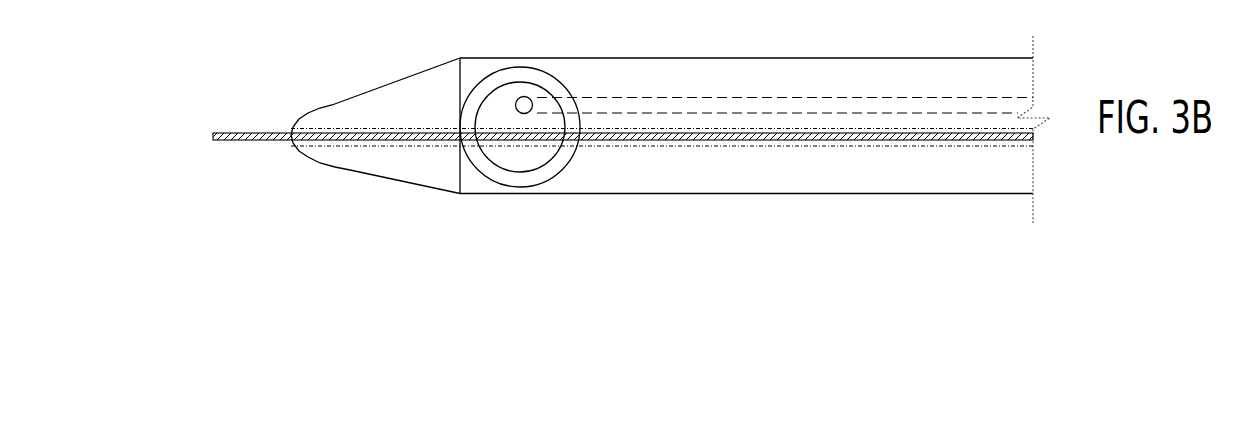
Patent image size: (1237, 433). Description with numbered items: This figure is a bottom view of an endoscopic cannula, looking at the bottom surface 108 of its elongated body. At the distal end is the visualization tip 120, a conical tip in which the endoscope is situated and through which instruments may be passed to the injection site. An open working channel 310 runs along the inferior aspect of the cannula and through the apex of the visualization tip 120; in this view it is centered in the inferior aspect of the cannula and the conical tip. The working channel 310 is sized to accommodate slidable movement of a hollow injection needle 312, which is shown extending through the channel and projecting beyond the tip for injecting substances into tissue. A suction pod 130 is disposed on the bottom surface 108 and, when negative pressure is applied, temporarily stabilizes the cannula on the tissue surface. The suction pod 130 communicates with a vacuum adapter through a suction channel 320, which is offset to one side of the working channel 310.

The bottom surface 108 is at (686, 177).
The visualization tip 120 is at (363, 172).
The suction pod 130 is at (493, 182).
The working channel 310 is at (827, 146).
The injection needle 312 is at (218, 137).
The suction channel 320 is at (935, 113).